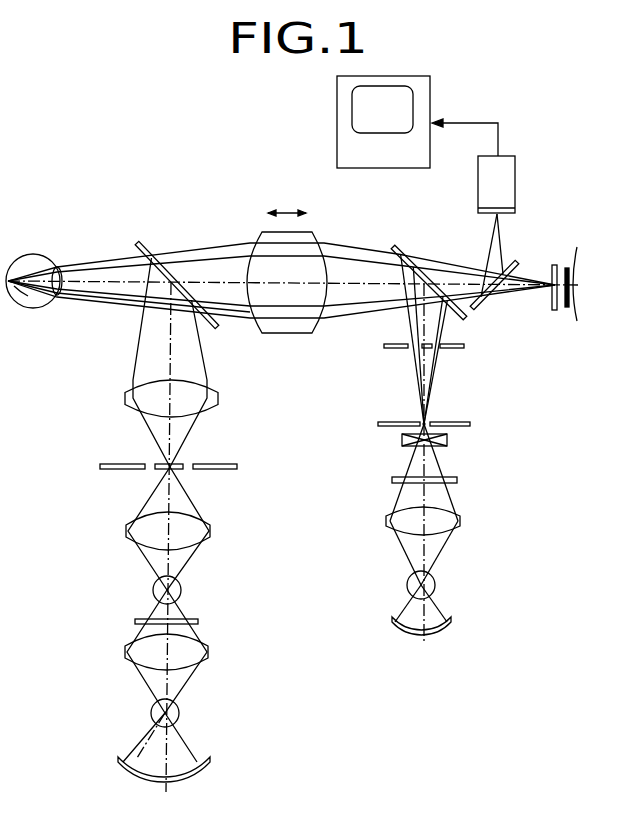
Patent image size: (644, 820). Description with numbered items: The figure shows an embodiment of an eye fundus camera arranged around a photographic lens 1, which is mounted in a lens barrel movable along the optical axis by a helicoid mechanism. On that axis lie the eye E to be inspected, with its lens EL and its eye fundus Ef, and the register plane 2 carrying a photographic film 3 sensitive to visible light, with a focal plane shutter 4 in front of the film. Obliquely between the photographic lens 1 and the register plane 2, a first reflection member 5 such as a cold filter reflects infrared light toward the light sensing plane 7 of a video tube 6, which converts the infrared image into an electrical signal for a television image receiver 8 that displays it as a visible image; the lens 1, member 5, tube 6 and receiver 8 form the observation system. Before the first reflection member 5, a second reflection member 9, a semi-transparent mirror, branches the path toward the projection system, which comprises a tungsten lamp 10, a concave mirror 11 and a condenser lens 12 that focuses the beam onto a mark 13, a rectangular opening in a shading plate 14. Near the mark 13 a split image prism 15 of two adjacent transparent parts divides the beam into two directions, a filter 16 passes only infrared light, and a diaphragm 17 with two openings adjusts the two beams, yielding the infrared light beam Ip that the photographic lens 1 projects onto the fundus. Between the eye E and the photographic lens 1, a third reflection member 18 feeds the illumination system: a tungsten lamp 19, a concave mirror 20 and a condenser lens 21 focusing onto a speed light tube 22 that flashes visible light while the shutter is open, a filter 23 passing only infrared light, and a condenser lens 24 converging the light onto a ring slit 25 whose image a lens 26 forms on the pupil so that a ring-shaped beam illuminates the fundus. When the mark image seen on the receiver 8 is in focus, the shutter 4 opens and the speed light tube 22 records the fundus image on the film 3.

The photographic lens 1 is at (286, 333).
The register plane 2 is at (575, 252).
The photographic film 3 is at (567, 308).
The shutter 4 is at (551, 303).
The first reflection member 5 is at (515, 266).
The video tube 6 is at (506, 172).
The light sensing plane 7 is at (508, 217).
The television image receiver 8 is at (432, 92).
The second reflection member 9 is at (466, 320).
The tungsten lamp 10 is at (436, 585).
The concave mirror 11 is at (452, 624).
The condenser lens 12 is at (461, 520).
The mark 13 is at (425, 422).
The shading plate 14 is at (472, 424).
The split image prism 15 is at (448, 442).
The filter 16 is at (458, 480).
The diaphragm 17 is at (460, 349).
The third reflection member 18 is at (151, 254).
The tungsten lamp 19 is at (181, 713).
The concave mirror 20 is at (212, 764).
The condenser lens 21 is at (210, 652).
The speed light tube 22 is at (183, 590).
The filter 23 is at (200, 622).
The condenser lens 24 is at (212, 531).
The ring slit 25 is at (238, 465).
The lens 26 is at (221, 398).
The eye to be inspected E is at (33, 254).
The eye lens EL is at (60, 268).
The eye fundus Ef is at (24, 303).
The infrared light beam Ip is at (427, 391).